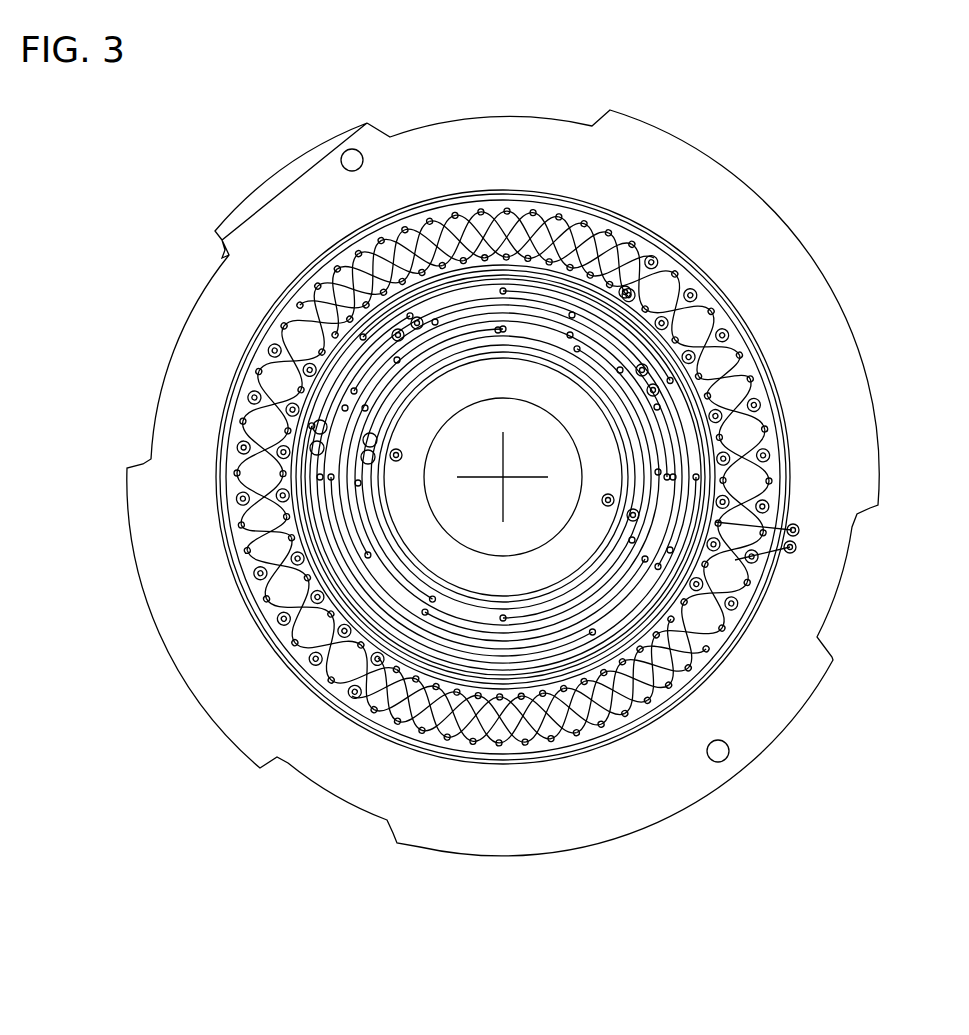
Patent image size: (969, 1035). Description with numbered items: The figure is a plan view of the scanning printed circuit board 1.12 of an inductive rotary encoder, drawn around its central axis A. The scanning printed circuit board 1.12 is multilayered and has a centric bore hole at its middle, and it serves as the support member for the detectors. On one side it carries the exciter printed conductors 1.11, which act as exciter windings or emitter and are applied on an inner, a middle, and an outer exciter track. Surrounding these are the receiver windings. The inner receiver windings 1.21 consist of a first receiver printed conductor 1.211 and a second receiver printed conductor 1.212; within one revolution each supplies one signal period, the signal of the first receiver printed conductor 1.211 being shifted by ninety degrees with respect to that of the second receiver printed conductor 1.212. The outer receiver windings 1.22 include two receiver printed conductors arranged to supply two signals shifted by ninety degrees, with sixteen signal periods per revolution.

The exciter printed conductors 1.11 is at (643, 305).
The scanning printed circuit board 1.12 is at (187, 296).
The inner receiver windings 1.21 is at (503, 525).
The first receiver printed conductor 1.211 is at (520, 655).
The second receiver printed conductor 1.212 is at (553, 640).
The outer receiver windings 1.22 is at (660, 665).
The axis A is at (503, 477).